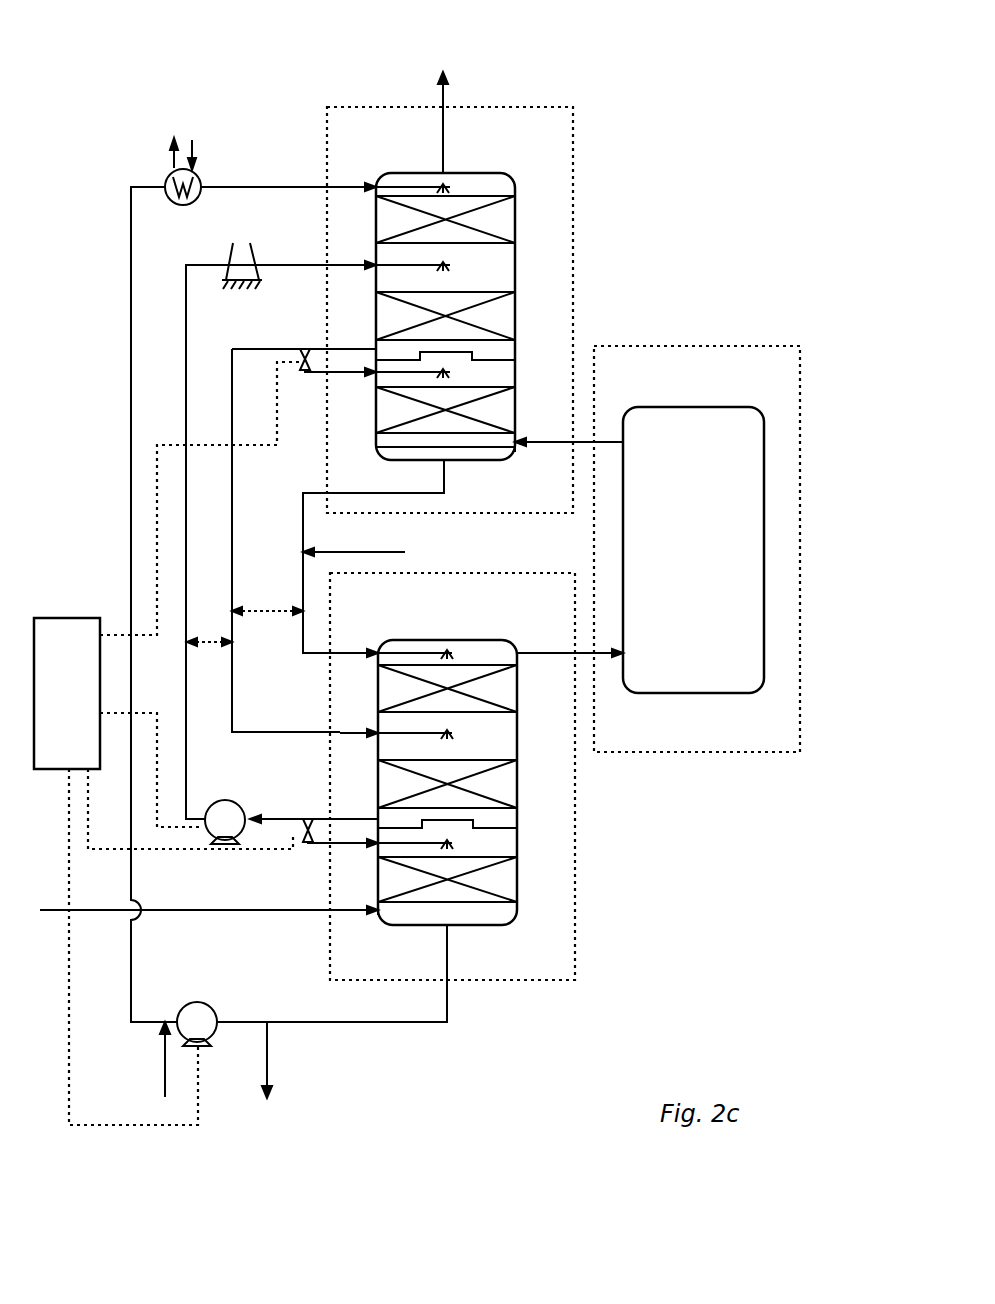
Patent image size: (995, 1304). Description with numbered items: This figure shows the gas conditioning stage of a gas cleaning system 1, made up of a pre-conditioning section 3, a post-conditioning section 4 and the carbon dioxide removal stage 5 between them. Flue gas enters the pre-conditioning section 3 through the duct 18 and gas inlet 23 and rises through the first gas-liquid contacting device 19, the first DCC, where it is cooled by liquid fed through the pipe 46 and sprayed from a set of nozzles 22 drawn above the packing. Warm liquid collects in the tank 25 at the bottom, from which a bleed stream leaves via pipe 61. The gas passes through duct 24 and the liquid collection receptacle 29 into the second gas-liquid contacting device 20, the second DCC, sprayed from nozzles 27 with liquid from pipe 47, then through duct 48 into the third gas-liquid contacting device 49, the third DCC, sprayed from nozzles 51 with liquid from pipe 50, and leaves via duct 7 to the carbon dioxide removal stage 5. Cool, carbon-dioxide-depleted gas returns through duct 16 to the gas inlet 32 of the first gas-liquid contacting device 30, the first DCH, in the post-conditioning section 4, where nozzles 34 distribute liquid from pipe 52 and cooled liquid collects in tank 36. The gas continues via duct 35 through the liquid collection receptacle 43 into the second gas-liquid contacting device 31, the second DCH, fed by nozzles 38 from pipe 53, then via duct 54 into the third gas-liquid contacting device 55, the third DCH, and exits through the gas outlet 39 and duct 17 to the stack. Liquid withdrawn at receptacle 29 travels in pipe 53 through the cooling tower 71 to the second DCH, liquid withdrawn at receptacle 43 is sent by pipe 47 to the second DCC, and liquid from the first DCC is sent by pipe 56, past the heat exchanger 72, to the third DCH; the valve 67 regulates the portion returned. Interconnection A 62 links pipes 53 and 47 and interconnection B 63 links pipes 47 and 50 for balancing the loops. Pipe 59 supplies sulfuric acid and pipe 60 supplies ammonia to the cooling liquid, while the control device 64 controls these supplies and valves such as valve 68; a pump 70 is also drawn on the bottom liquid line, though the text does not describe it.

The gas cleaning system 1 is at (104, 70).
The pre-conditioning section 3 is at (575, 935).
The post-conditioning section 4 is at (573, 140).
The CO2 removal stage 5 is at (686, 346).
The duct 7 is at (545, 653).
The duct 16 is at (543, 442).
The duct 17 is at (443, 95).
The duct 18 is at (198, 912).
The first gas-liquid contacting device 19 is at (517, 875).
The second gas-liquid contacting device 20 is at (517, 787).
The liquid distributor 22 is at (402, 845).
The gas inlet 23 is at (372, 908).
The duct 24 is at (517, 833).
The tank 25 is at (485, 918).
The set of nozzles 27 is at (400, 733).
The liquid collection receptacle 29 is at (517, 826).
The first gas-liquid contacting device 30 is at (515, 400).
The second gas-liquid contacting device 31 is at (515, 302).
The gas inlet 32 is at (515, 455).
The set of nozzles 34 is at (400, 372).
The duct 35 is at (505, 372).
The tank 36 is at (473, 447).
The set of nozzles 38 is at (400, 265).
The gas outlet 39 is at (443, 173).
The liquid collection receptacle 43 is at (505, 358).
The pipe 46 is at (313, 843).
The pipe 47 is at (283, 732).
The duct 48 is at (517, 743).
The third gas-liquid contacting device 49 is at (517, 685).
The pipe 50 is at (303, 572).
The set of nozzles 51 is at (423, 653).
The pipe 52 is at (343, 375).
The pipe 53 is at (186, 320).
The duct 54 is at (515, 267).
The third gas-liquid contacting device 55 is at (515, 217).
The pipe 56 is at (131, 290).
The pipe 59 is at (165, 1070).
The pipe 60 is at (380, 552).
The pipe 61 is at (267, 1050).
The interconnection A 62 is at (210, 645).
The interconnection B 63 is at (268, 618).
The control device 64 is at (70, 618).
The liquid flow regulating device 67 is at (300, 365).
The valve 68 is at (302, 820).
The pump 70 is at (212, 1010).
The cooling tower 71 is at (252, 246).
The heat exchanger 72 is at (201, 180).